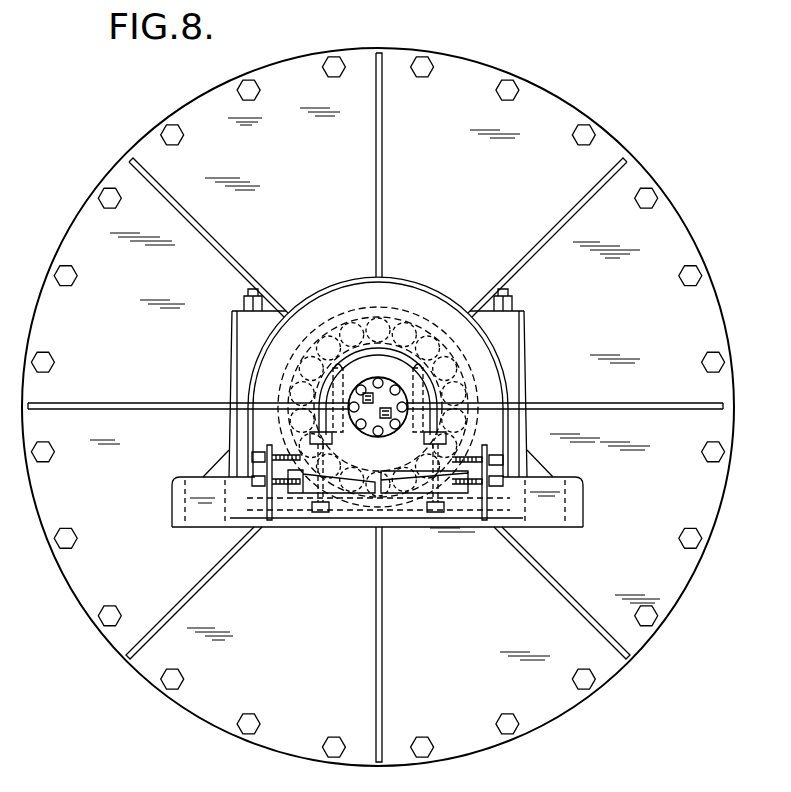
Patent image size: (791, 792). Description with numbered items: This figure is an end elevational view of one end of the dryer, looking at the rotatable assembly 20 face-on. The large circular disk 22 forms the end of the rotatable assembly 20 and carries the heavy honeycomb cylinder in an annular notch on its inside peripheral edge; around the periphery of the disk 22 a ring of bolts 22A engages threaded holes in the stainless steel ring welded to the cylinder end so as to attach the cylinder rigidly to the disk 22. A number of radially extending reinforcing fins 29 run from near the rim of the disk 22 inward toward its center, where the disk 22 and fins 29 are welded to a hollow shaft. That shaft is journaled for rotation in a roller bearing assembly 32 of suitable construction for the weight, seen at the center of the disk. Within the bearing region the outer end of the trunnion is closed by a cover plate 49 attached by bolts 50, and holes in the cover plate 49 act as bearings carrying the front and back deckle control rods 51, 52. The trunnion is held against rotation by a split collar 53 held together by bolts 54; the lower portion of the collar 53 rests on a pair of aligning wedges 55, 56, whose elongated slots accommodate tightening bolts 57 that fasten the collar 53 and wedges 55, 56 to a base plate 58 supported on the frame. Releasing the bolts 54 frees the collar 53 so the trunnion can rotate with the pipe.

The rotatable assembly 20 is at (573, 88).
The circular disk 22 is at (683, 238).
The bolts 22A is at (702, 276).
The radially extending reinforcing fins 29 is at (375, 192).
The roller bearing assembly 32 is at (441, 277).
The cover plate 49 is at (387, 385).
The bolts 50 is at (377, 434).
The front deckle control rod 51 is at (368, 393).
The back deckle control rod 52 is at (386, 419).
The split collar 53 is at (376, 352).
The bolts 54 is at (296, 373).
The aligning wedge 55 is at (456, 494).
The aligning wedge 56 is at (301, 492).
The tightening bolts 57 is at (310, 440).
The base plate 58 is at (359, 528).